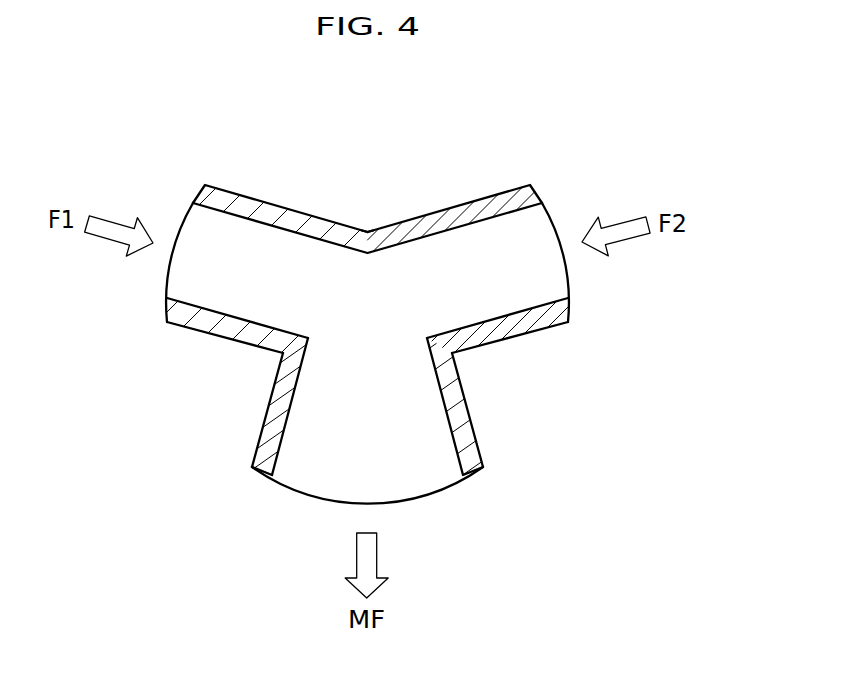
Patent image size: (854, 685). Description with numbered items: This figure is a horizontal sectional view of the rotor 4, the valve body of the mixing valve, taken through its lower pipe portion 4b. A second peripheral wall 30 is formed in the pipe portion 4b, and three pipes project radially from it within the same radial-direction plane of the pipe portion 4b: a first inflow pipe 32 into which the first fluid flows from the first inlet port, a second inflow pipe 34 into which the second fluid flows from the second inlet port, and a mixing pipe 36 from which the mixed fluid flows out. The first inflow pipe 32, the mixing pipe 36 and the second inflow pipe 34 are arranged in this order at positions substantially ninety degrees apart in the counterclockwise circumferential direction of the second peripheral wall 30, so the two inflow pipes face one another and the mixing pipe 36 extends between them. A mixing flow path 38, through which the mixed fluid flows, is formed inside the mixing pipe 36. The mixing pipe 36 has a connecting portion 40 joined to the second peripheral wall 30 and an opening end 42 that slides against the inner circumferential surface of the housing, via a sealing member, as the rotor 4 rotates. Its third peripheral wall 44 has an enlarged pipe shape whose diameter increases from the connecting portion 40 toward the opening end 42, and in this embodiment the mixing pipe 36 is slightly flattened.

The rotor 4 is at (540, 145).
The pipe portion 4b is at (368, 232).
The second peripheral wall 30 is at (367, 228).
The first inflow pipe 32 is at (233, 192).
The second inflow pipe 34 is at (497, 190).
The mixing pipe 36 is at (478, 440).
The mixing flow path 38 is at (393, 473).
The connecting portion 40 is at (283, 354).
The opening end 42 is at (256, 473).
The third peripheral wall 44 is at (257, 442).